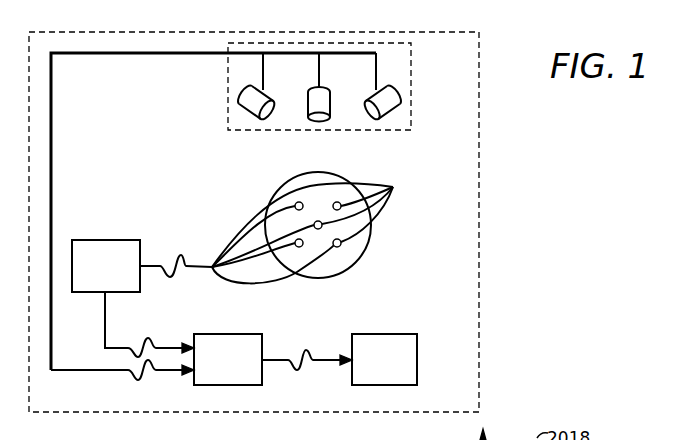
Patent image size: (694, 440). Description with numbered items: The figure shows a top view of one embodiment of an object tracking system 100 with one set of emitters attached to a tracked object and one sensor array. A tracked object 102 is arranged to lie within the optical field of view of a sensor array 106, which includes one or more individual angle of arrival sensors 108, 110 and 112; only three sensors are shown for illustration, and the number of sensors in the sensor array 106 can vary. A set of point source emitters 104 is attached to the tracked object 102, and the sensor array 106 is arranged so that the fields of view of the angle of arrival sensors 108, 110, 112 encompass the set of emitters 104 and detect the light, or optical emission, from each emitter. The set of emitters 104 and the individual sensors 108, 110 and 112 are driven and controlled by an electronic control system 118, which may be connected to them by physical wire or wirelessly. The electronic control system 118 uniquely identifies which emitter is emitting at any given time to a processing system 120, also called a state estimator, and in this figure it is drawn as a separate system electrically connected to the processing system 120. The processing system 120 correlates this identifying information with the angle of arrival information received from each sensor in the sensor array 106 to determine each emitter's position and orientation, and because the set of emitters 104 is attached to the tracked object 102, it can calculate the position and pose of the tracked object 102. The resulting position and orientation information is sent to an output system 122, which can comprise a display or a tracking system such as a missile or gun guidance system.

The object tracking system 100 is at (520, 158).
The tracked object 102 is at (355, 262).
The set of point source emitters 104 is at (319, 229).
The sensor array 106 is at (226, 122).
The angle of arrival sensor 108 is at (243, 94).
The angle of arrival sensor 110 is at (332, 106).
The angle of arrival sensor 112 is at (397, 93).
The electronic control system 118 is at (142, 298).
The processing system 120 is at (201, 359).
The output system 122 is at (384, 359).